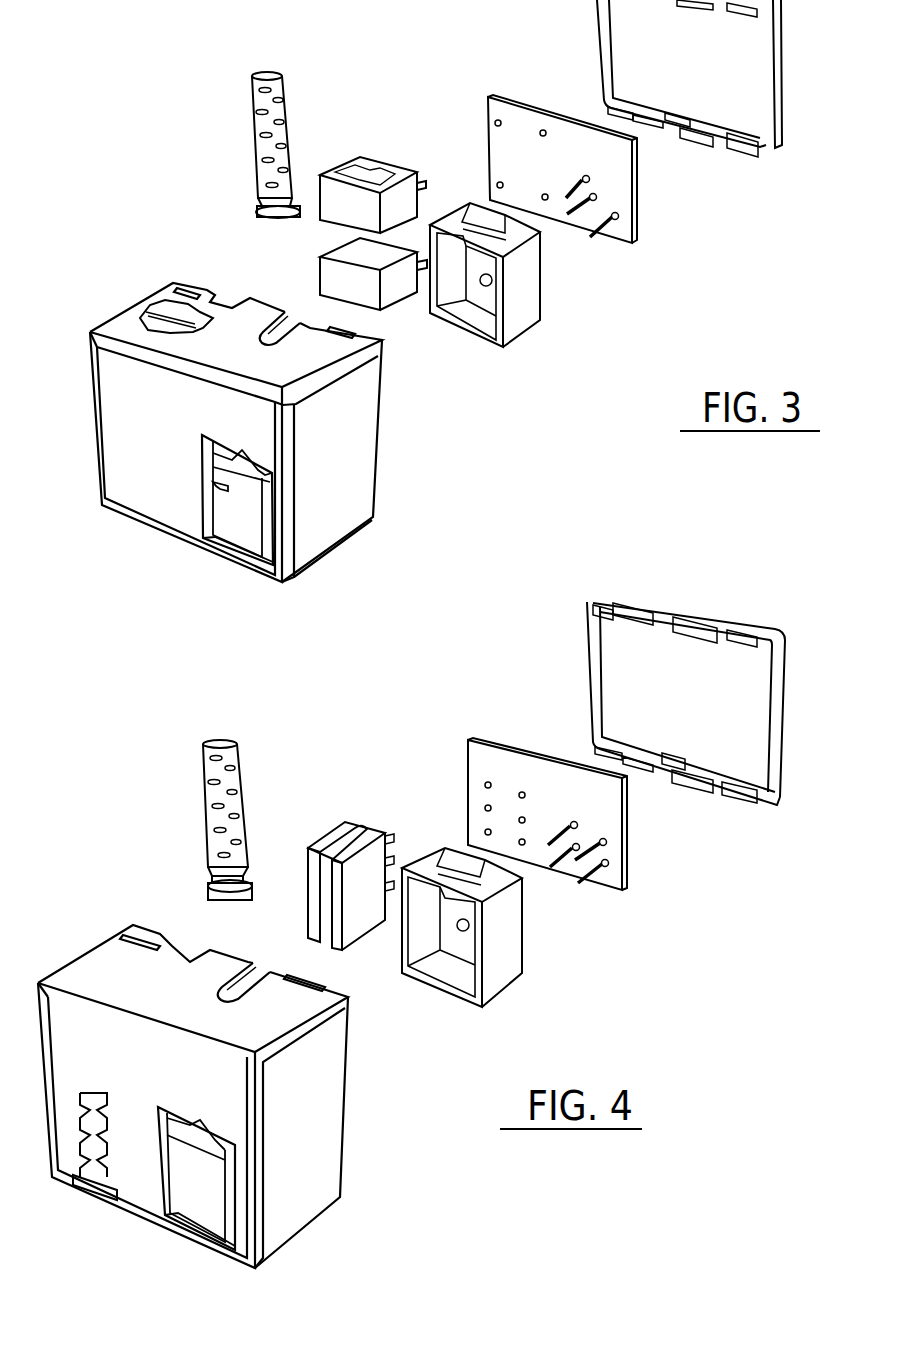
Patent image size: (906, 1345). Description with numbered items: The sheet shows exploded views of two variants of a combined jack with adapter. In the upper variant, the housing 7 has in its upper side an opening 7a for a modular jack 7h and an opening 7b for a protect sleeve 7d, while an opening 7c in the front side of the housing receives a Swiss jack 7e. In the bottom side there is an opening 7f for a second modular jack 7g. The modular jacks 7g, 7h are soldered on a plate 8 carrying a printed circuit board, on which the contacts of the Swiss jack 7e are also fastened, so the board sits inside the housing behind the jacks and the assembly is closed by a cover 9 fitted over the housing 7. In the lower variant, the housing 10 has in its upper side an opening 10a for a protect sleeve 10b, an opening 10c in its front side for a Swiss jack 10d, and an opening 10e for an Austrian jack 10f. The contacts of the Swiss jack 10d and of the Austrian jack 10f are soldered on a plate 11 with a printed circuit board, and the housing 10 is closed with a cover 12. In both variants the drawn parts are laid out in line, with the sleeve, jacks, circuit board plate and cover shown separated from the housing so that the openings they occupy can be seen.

In FIG. 3, the housing 7 is at (350, 483).
In FIG. 3, the opening 7a is at (175, 323).
In FIG. 3, the opening 7b is at (293, 322).
In FIG. 3, the opening 7c is at (253, 528).
In FIG. 3, the protect sleeve 7d is at (253, 138).
In FIG. 3, the Swiss jack 7e is at (525, 282).
In FIG. 3, the opening 7f is at (227, 484).
In FIG. 3, the modular jack 7g is at (337, 278).
In FIG. 3, the modular jack 7h is at (342, 192).
In FIG. 3, the plate with printed circuit board 8 is at (623, 217).
In FIG. 3, the cover 9 is at (743, 105).
In FIG. 4, the housing 10 is at (327, 1117).
In FIG. 4, the opening 10a is at (255, 980).
In FIG. 4, the protect sleeve 10b is at (210, 855).
In FIG. 4, the opening 10c is at (200, 1200).
In FIG. 4, the Swiss jack 10d is at (505, 957).
In FIG. 4, the opening 10e is at (78, 1176).
In FIG. 4, the Austrian jack 10f is at (342, 827).
In FIG. 4, the plate with printed circuit board 11 is at (468, 797).
In FIG. 4, the cover 12 is at (743, 728).